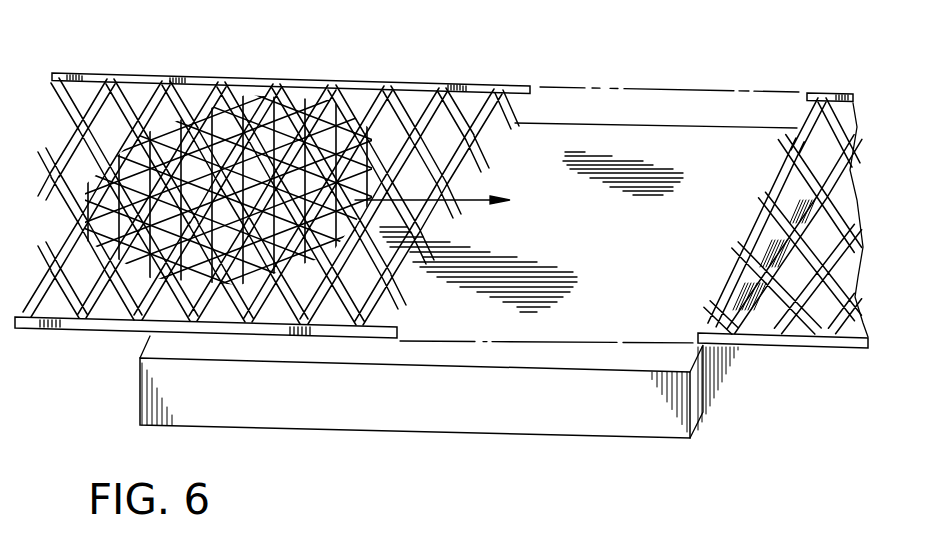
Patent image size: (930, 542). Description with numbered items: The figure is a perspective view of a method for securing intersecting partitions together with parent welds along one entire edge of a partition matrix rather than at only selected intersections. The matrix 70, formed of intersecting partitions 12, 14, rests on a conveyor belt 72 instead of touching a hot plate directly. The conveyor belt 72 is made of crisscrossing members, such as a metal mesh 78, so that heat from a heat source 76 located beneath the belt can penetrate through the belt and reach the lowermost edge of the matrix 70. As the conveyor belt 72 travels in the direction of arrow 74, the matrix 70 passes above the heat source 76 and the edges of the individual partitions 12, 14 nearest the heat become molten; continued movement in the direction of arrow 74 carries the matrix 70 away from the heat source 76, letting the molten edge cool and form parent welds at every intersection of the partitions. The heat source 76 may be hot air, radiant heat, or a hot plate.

The partition 12 is at (147, 320).
The partition 14 is at (353, 87).
The matrix 70 is at (258, 92).
The conveyor belt 72 is at (562, 82).
The arrow 74 is at (472, 203).
The heat source 76 is at (390, 427).
The metal mesh 78 is at (418, 84).